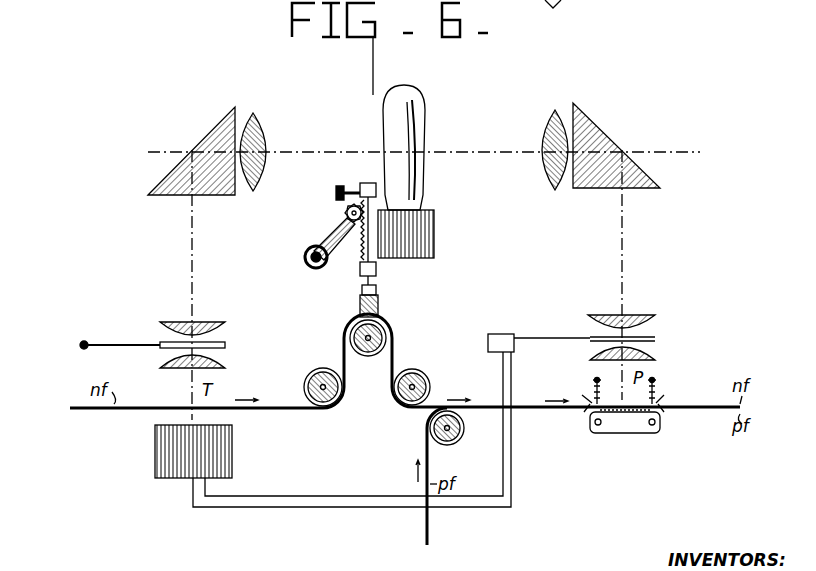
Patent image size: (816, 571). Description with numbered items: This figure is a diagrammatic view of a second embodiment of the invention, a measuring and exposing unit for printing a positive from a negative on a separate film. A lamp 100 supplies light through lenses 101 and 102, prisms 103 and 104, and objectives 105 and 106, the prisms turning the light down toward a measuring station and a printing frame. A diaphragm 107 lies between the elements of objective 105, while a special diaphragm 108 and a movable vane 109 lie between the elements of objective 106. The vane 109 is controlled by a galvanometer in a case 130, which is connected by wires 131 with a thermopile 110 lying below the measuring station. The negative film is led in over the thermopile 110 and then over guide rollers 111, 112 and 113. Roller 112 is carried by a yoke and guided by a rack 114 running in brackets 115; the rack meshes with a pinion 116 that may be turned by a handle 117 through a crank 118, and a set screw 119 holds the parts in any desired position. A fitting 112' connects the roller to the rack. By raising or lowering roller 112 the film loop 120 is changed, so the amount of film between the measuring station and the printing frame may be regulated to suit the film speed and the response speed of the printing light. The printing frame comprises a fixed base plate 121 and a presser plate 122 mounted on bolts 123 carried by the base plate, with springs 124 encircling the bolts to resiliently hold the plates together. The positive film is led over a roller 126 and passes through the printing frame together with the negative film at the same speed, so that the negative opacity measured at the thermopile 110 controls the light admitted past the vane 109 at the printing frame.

The lamp 100 is at (405, 133).
The lens 101 is at (262, 142).
The lens 102 is at (548, 138).
The prism 103 is at (215, 148).
The prism 104 is at (597, 140).
The objective 105 is at (210, 326).
The objective 106 is at (660, 310).
The diaphragm 107 is at (226, 344).
The special diaphragm 108 is at (658, 345).
The movable vane 109 is at (658, 338).
The thermopile 110 is at (215, 452).
The guide roller 111 is at (306, 380).
The guide roller 112 is at (346, 338).
The roller support 112' is at (398, 301).
The guide roller 113 is at (406, 370).
The rack 114 is at (363, 268).
The brackets 115 is at (380, 277).
The pinion 116 is at (346, 213).
The handle 117 is at (326, 236).
The crank 118 is at (305, 260).
The set screw 119 is at (338, 186).
The film loop 120 is at (405, 429).
The base plate 121 is at (662, 426).
The presser plate 122 is at (598, 392).
The bolts 123 is at (592, 392).
The springs 124 is at (580, 414).
The roller 126 is at (458, 443).
The case 130 is at (505, 333).
The wires 131 is at (503, 373).